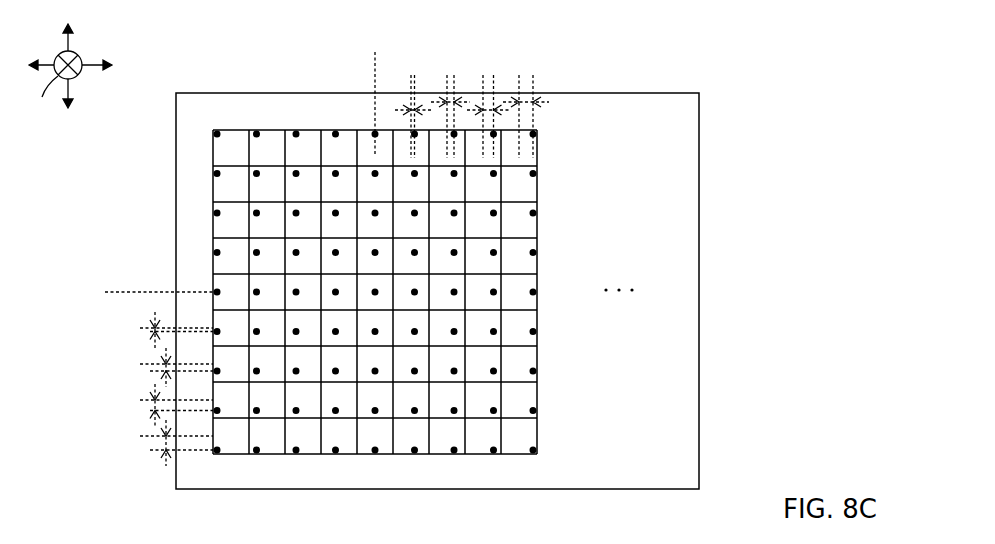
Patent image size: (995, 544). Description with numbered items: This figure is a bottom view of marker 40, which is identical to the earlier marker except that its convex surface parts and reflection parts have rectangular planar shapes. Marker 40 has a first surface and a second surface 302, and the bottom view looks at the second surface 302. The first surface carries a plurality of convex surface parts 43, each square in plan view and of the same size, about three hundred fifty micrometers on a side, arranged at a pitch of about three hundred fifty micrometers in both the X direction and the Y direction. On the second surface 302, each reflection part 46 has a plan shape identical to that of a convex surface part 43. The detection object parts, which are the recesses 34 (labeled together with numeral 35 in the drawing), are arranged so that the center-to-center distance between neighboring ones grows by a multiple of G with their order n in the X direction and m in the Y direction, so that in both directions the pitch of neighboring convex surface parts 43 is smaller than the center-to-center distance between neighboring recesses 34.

The marker 40 is at (437, 254).
The second surface 302 is at (665, 183).
The convex surface part 43 is at (437, 293).
The pixel 35 is at (507, 292).
The recess 34 is at (537, 410).
The reflection part 46 is at (518, 434).